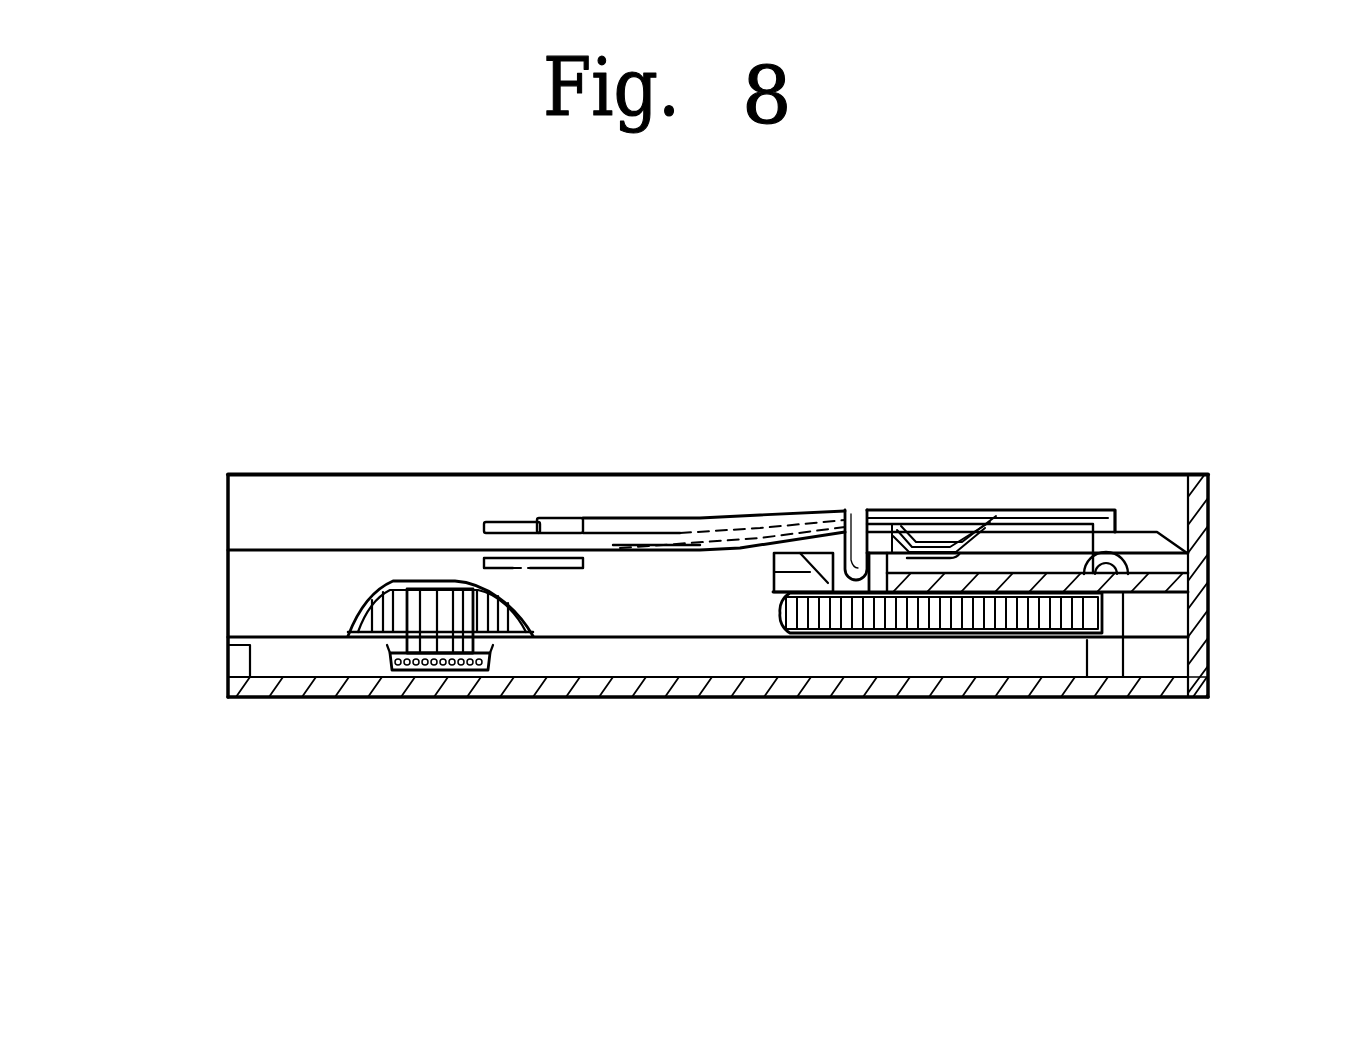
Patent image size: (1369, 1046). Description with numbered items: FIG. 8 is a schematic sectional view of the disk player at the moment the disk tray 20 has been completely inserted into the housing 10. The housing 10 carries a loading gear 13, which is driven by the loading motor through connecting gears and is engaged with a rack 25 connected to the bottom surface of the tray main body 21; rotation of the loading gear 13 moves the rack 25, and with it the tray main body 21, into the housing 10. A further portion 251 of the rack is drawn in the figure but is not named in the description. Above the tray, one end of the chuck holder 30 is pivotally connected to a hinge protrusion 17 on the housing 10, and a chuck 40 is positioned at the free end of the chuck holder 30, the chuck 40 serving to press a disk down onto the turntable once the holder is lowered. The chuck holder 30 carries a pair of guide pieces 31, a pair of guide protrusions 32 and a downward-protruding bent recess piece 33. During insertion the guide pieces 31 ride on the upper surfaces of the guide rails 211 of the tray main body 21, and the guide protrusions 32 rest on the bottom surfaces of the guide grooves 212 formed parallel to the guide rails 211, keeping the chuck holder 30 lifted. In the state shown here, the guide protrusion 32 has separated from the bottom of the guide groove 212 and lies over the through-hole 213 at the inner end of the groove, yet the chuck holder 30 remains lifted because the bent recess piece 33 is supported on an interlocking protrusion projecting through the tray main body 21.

The housing 10 is at (676, 735).
The loading gear 13 is at (428, 640).
The hinge protrusion 17 is at (1190, 564).
The disk tray 20 is at (285, 650).
The tray main body 21 is at (278, 560).
The rack 25 is at (1120, 636).
The chuck holder 30 is at (1058, 498).
The guide pieces 31 is at (572, 520).
The guide protrusions 32 is at (843, 512).
The bent recess piece 33 is at (960, 600).
The chuck 40 is at (507, 522).
The guide rails 211 is at (1022, 510).
The guide grooves 212 is at (1166, 540).
The through-hole 213 is at (893, 520).
The coil support 251 is at (893, 620).